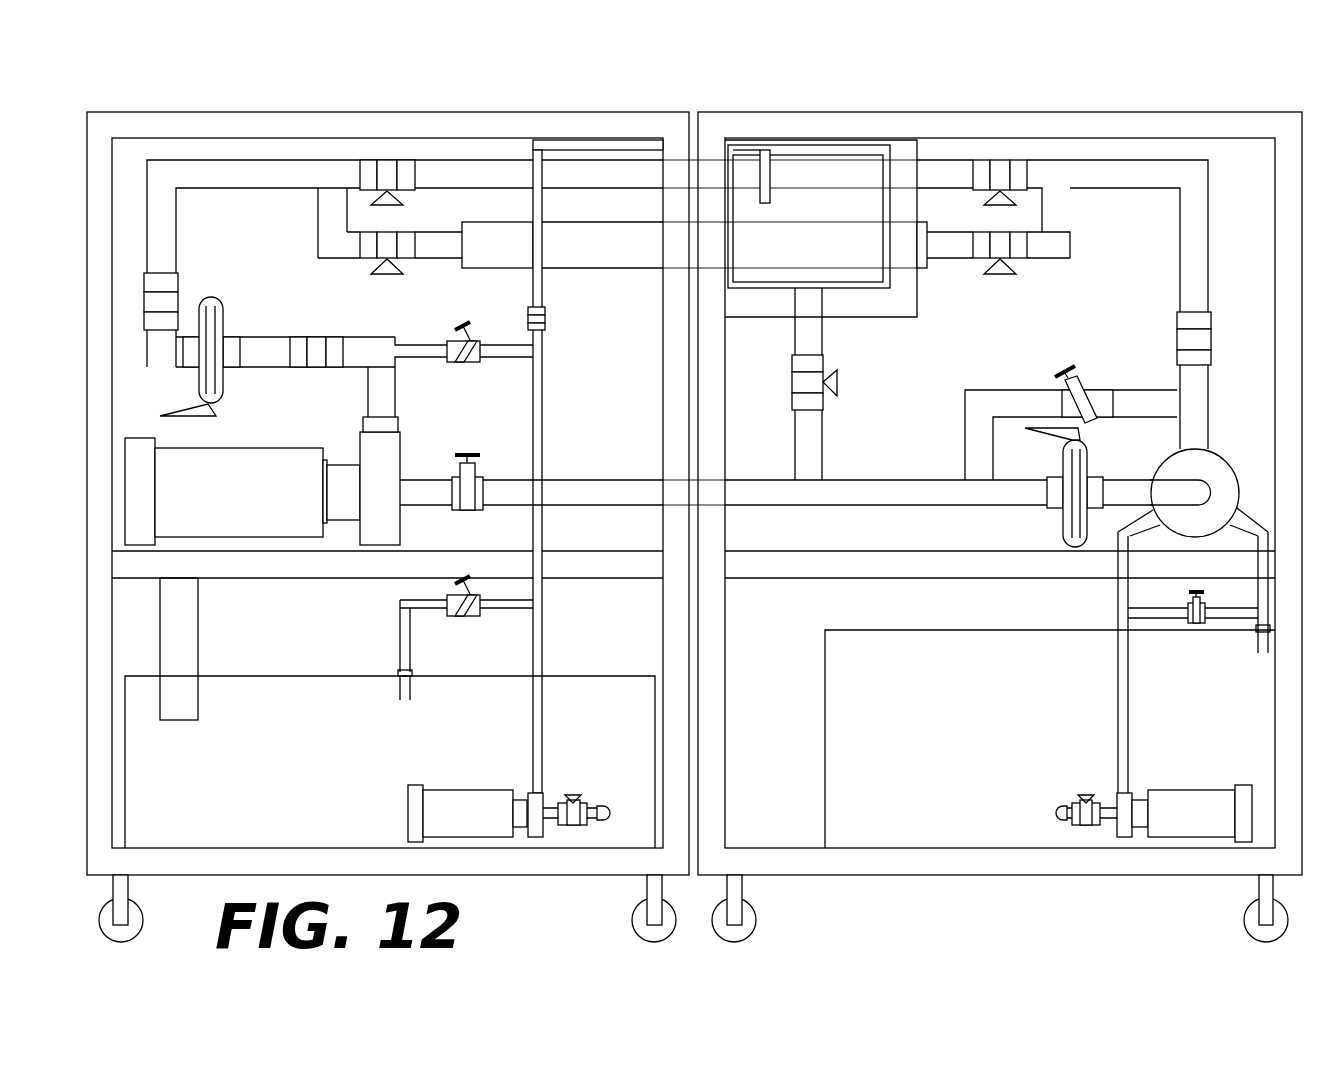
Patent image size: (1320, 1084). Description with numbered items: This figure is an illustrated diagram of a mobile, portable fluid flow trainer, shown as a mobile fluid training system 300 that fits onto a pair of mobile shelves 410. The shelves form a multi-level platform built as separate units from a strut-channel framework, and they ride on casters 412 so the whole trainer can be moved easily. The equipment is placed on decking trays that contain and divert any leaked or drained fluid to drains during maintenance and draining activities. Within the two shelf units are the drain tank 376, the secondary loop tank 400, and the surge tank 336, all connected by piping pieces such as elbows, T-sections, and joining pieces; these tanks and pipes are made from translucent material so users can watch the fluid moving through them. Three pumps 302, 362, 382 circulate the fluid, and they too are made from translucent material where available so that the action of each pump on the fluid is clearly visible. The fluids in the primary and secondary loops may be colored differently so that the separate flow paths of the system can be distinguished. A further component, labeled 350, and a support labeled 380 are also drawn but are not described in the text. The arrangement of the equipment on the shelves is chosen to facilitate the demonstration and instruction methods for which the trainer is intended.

The mobile fluid training system 300 is at (1215, 79).
The mobile shelves 410 is at (502, 112).
The pump 302 is at (215, 448).
The surge tank 336 is at (865, 290).
The pump 350 is at (1230, 462).
The support leg 380 is at (198, 617).
The drain tank 376 is at (275, 676).
The secondary loop tank 400 is at (870, 630).
The pump 362 is at (488, 790).
The pump 382 is at (1153, 790).
The casters 412 is at (670, 935).